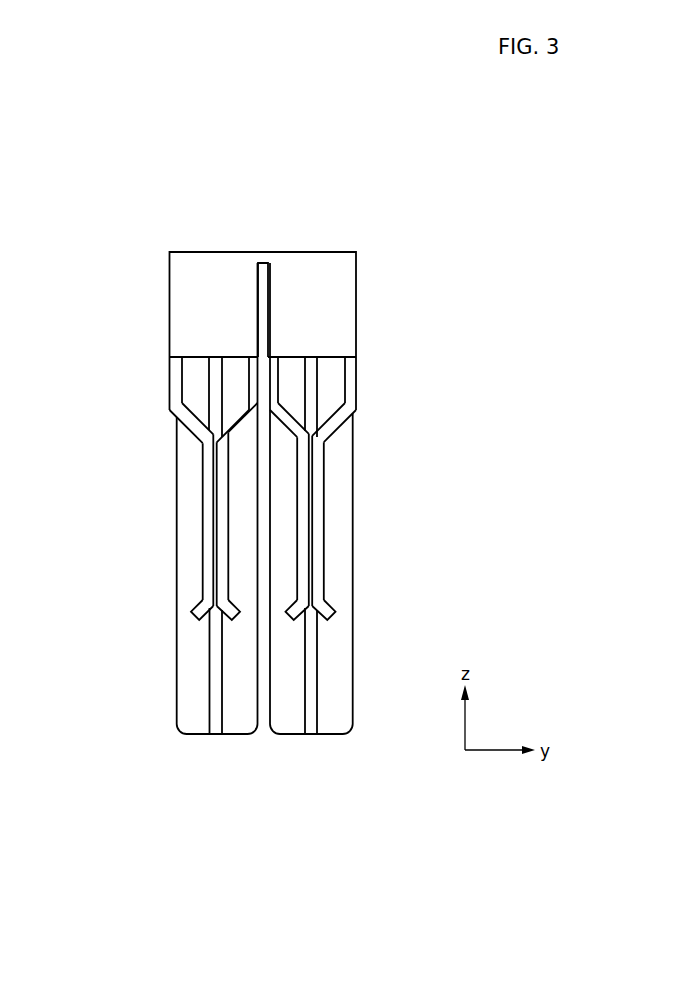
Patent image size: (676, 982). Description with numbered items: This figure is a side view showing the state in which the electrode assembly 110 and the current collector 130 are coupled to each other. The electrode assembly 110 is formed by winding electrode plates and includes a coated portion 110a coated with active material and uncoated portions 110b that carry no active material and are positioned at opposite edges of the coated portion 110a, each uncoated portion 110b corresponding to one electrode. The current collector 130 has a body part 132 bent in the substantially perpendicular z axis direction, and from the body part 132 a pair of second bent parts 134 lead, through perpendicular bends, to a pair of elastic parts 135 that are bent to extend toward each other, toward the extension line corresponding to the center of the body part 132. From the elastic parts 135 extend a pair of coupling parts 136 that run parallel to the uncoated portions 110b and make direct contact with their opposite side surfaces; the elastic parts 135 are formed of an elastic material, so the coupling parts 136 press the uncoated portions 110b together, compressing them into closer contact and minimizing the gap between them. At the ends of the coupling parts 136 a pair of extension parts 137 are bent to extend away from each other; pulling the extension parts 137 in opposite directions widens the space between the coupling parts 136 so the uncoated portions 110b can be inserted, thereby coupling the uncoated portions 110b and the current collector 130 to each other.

The electrode assembly 110 is at (212, 536).
The coated portion 110a is at (285, 728).
The uncoated portions 110b is at (310, 725).
The current collector 130 is at (254, 450).
The body part 132 is at (217, 268).
The second bent parts 134 is at (175, 388).
The elastic parts 135 is at (192, 425).
The coupling parts 136 is at (328, 502).
The extension parts 137 is at (336, 611).